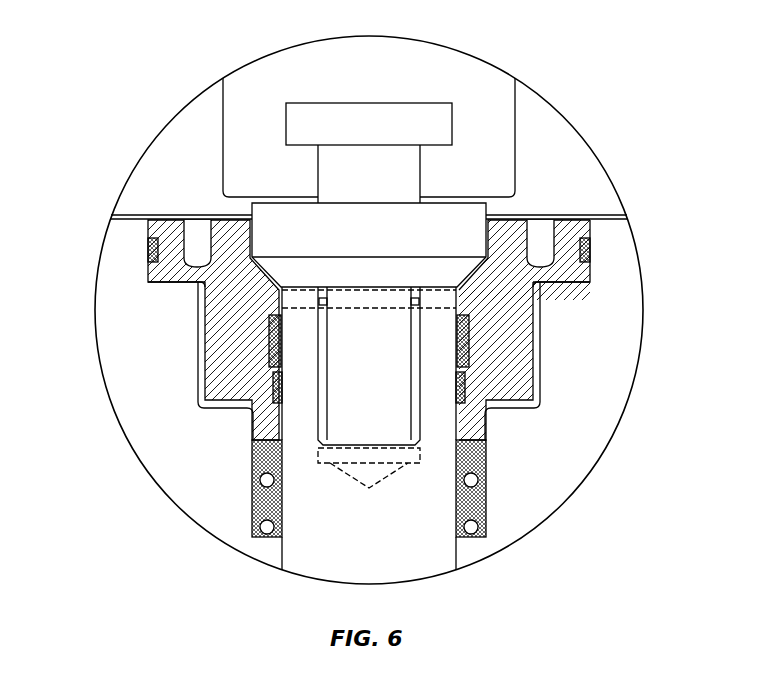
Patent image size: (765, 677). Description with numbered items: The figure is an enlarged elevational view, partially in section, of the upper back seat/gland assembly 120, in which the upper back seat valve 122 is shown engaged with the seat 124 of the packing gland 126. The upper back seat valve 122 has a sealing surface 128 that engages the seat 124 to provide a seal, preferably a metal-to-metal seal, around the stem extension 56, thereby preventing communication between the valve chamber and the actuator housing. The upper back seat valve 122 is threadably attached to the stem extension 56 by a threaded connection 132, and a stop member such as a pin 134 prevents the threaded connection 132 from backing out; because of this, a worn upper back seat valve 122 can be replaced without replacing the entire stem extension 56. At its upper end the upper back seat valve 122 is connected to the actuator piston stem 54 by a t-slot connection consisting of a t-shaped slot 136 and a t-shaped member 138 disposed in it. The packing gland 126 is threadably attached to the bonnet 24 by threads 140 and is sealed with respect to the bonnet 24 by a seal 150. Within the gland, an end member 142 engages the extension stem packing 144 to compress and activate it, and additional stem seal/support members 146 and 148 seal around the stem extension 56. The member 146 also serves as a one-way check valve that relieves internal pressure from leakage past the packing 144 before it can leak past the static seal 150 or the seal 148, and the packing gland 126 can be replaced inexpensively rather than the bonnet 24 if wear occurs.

The actuator piston stem 54 is at (428, 63).
The t-shaped slot 136 is at (327, 103).
The t-shaped member 138 is at (352, 118).
The bonnet 24 is at (117, 263).
The threads 140 is at (203, 365).
The seat 124 is at (490, 268).
The packing gland 126 is at (472, 262).
The upper back seat valve 122 is at (270, 218).
The sealing surface 128 is at (410, 268).
The pin 134 is at (290, 299).
The threaded connection 132 is at (370, 418).
The end member 142 is at (263, 430).
The stem seal/support member 148 is at (465, 400).
The stem seal/support member 146 is at (465, 343).
The seal 150 is at (592, 250).
The extension stem packing 144 is at (253, 503).
The stem extension 56 is at (323, 563).
The upper back seat/gland assembly 120 is at (555, 548).